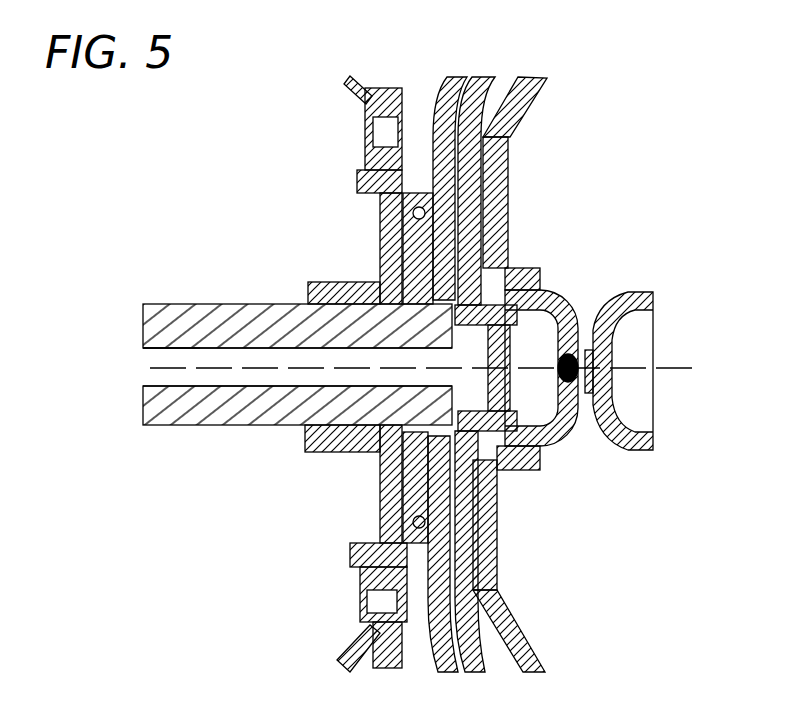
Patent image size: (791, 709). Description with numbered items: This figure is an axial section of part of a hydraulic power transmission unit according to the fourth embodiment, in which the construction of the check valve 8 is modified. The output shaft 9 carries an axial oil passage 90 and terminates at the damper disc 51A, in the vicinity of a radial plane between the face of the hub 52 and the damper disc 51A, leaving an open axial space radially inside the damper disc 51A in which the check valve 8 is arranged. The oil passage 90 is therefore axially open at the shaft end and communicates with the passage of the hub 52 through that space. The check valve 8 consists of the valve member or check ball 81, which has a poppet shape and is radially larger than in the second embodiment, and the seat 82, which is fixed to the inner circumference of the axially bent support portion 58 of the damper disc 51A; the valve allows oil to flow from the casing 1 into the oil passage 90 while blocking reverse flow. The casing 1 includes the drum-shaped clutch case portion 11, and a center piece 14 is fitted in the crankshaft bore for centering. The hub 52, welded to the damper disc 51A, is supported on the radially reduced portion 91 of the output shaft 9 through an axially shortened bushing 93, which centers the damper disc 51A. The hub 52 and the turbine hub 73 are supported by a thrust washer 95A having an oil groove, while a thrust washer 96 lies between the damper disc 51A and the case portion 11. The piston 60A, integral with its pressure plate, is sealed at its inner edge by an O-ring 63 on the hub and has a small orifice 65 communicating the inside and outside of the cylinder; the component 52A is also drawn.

The casing 1 is at (508, 180).
The clutch case portion 11 is at (527, 120).
The check valve 8 is at (522, 284).
The output shaft 9 is at (194, 297).
The center piece 14 is at (657, 326).
The damper disc 51A is at (497, 547).
The hub 52 is at (487, 262).
The rotor plate lower portion 52A is at (497, 522).
The axial support portion 58 is at (523, 452).
The piston 60A is at (440, 77).
The O-ring 63 is at (375, 520).
The orifice 65 is at (497, 592).
The turbine hub 73 is at (322, 280).
The check ball 81 is at (570, 394).
The seat 82 is at (575, 303).
The oil passage 90 is at (150, 372).
The radially smaller portion 91 is at (270, 369).
The bushing 93 is at (452, 370).
The thrust washer 95A is at (378, 469).
The thrust washer 96 is at (497, 489).